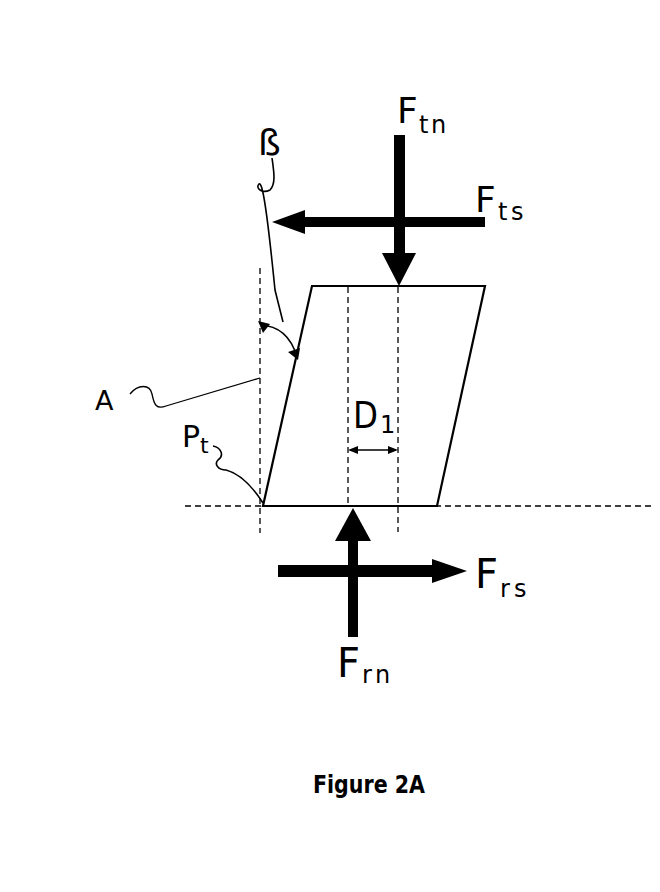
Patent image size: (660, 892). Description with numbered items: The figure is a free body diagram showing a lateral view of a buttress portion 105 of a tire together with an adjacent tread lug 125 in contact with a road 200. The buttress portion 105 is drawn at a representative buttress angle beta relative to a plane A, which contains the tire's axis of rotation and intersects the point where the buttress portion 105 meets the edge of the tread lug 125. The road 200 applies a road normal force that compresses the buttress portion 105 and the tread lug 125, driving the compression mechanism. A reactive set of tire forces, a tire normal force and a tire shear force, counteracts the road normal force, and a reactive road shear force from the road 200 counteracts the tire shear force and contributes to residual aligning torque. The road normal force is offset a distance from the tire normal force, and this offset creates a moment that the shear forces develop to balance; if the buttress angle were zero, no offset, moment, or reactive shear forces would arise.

The buttress portion 105 is at (425, 395).
The road 200 is at (542, 502).
The tread lug 125 is at (307, 507).